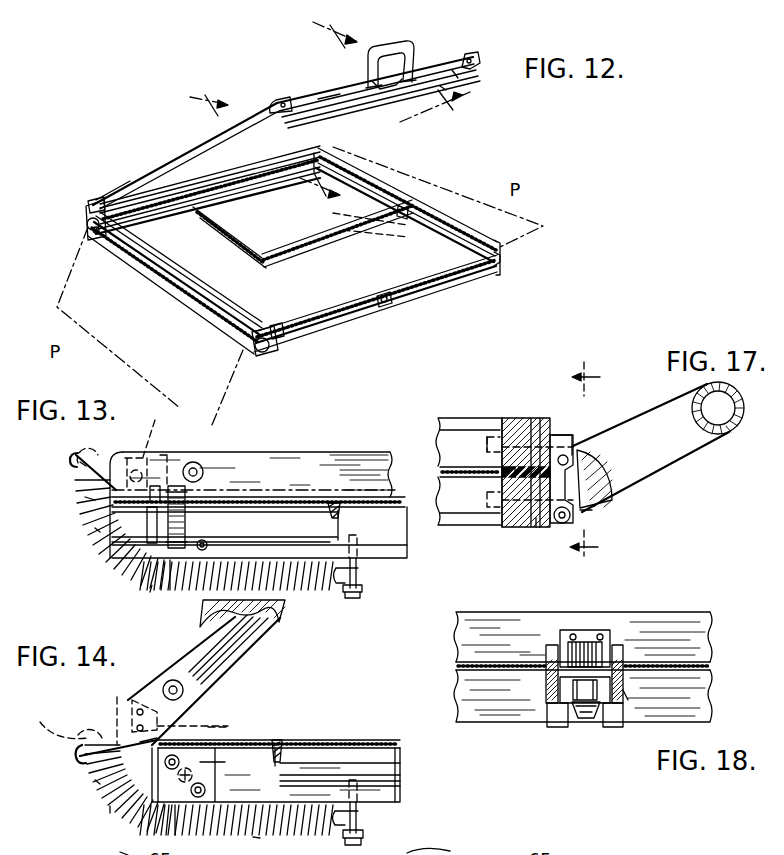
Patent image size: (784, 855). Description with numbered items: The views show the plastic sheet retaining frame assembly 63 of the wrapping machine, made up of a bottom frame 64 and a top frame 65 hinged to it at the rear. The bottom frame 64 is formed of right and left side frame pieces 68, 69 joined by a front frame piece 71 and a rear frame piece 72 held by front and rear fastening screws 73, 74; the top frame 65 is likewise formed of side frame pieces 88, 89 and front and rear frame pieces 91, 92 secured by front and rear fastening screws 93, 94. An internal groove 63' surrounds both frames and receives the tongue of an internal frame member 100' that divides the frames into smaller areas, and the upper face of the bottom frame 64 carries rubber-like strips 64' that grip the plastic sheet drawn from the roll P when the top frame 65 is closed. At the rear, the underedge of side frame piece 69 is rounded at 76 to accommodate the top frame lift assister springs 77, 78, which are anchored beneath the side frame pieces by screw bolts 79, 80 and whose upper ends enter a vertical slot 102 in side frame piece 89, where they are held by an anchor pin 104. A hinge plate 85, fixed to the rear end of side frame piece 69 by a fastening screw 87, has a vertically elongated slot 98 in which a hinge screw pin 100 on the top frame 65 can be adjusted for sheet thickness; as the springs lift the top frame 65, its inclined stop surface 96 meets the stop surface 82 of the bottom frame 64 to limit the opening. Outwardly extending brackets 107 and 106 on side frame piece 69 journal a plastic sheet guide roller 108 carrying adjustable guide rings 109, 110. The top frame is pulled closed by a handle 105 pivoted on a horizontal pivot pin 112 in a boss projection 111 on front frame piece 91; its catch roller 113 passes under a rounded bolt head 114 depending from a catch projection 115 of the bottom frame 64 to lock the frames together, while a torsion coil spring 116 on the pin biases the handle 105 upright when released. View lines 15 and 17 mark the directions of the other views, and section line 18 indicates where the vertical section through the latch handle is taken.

In FIG. 12, the section line 15 is at (237, 158).
In FIG. 12, the section line 17 is at (389, 81).
In FIG. 17, the section line 18 is at (596, 462).
In FIG. 12, the plastic sheet retaining frame assembly 63 is at (115, 159).
In FIG. 12, the internal groove 63' is at (407, 193).
In FIG. 12, the bottom frame 64 is at (294, 285).
In FIG. 13, the bottom frame 64 is at (276, 563).
In FIG. 14, the bottom frame 64 is at (295, 790).
In FIG. 17, the bottom frame 64 is at (504, 487).
In FIG. 18, the bottom frame 64 is at (583, 711).
In FIG. 12, the rubber-like strips 64' is at (296, 232).
In FIG. 13, the rubber-like strips 64' is at (275, 461).
In FIG. 14, the rubber-like strips 64' is at (279, 731).
In FIG. 17, the rubber-like strips 64' is at (495, 472).
In FIG. 18, the rubber-like strips 64' is at (605, 675).
In FIG. 12, the top frame 65 is at (437, 60).
In FIG. 13, the top frame 65 is at (291, 449).
In FIG. 14, the top frame 65 is at (172, 652).
In FIG. 17, the top frame 65 is at (466, 417).
In FIG. 18, the top frame 65 is at (509, 606).
In FIG. 12, the right side frame piece 68 is at (403, 220).
In FIG. 17, the right side frame piece 68 is at (493, 518).
In FIG. 12, the left side frame piece 69 is at (228, 312).
In FIG. 13, the left side frame piece 69 is at (398, 541).
In FIG. 14, the left side frame piece 69 is at (394, 789).
In FIG. 12, the front frame piece 71 is at (316, 316).
In FIG. 17, the front frame piece 71 is at (518, 522).
In FIG. 12, the rear frame piece 72 is at (213, 201).
In FIG. 12, the front fastening screws 73 is at (283, 343).
In FIG. 17, the front fastening screws 73 is at (537, 530).
In FIG. 14, the rear fastening screws 74 is at (222, 785).
In FIG. 13, the rounded underedge 76 is at (112, 550).
In FIG. 14, the rounded underedge 76 is at (130, 808).
In FIG. 12, the top frame lift assister spring 77 is at (312, 189).
In FIG. 13, the top frame lift assister spring 78 is at (85, 500).
In FIG. 14, the top frame lift assister spring 78 is at (254, 838).
In FIG. 12, the screw bolt 79 is at (372, 228).
In FIG. 13, the screw bolt 80 is at (358, 572).
In FIG. 14, the screw bolt 80 is at (360, 813).
In FIG. 13, the top stop surface 82 is at (95, 529).
In FIG. 14, the top stop surface 82 is at (97, 781).
In FIG. 13, the hinge plate 85 is at (121, 456).
In FIG. 14, the hinge plate 85 is at (117, 700).
In FIG. 13, the fastening screw 87 is at (150, 593).
In FIG. 14, the fastening screw 87 is at (97, 815).
In FIG. 12, the side frame piece 88 is at (454, 77).
In FIG. 17, the side frame piece 88 is at (493, 420).
In FIG. 12, the side frame piece 89 is at (170, 163).
In FIG. 13, the side frame piece 89 is at (346, 448).
In FIG. 14, the side frame piece 89 is at (233, 659).
In FIG. 12, the front frame piece 91 is at (330, 98).
In FIG. 12, the rear frame piece 92 is at (255, 154).
In FIG. 12, the front fastening screws 93 is at (281, 100).
In FIG. 17, the front fastening screws 93 is at (533, 417).
In FIG. 12, the rear fastening screws 94 is at (97, 202).
In FIG. 13, the rear fastening screws 94 is at (195, 461).
In FIG. 14, the rear fastening screws 94 is at (166, 683).
In FIG. 12, the inclined stop surface 96 is at (86, 219).
In FIG. 13, the inclined stop surface 96 is at (78, 473).
In FIG. 14, the inclined stop surface 96 is at (87, 723).
In FIG. 13, the elongated slot 98 is at (168, 454).
In FIG. 14, the elongated slot 98 is at (205, 723).
In FIG. 13, the hinge screw pin 100 is at (161, 430).
In FIG. 14, the hinge screw pin 100 is at (235, 726).
In FIG. 12, the internal frame member 100' is at (337, 233).
In FIG. 13, the vertical slot 102 is at (100, 453).
In FIG. 14, the vertical slot 102 is at (53, 718).
In FIG. 13, the anchor pin 104 is at (76, 456).
In FIG. 14, the anchor pin 104 is at (78, 751).
In FIG. 12, the handle 105 is at (396, 48).
In FIG. 17, the handle 105 is at (657, 415).
In FIG. 18, the handle 105 is at (633, 695).
In FIG. 12, the hinge bracket 106 is at (273, 350).
In FIG. 12, the bracket 107 is at (85, 203).
In FIG. 13, the bracket 107 is at (182, 572).
In FIG. 14, the bracket 107 is at (211, 776).
In FIG. 12, the plastic sheet guide roller 108 is at (168, 282).
In FIG. 13, the plastic sheet guide roller 108 is at (273, 517).
In FIG. 14, the plastic sheet guide roller 108 is at (336, 750).
In FIG. 12, the adjustable guide ring 109 is at (260, 353).
In FIG. 12, the adjustable guide ring 110 is at (90, 232).
In FIG. 13, the adjustable guide ring 110 is at (216, 507).
In FIG. 17, the boss projection 111 is at (570, 436).
In FIG. 18, the boss projection 111 is at (589, 634).
In FIG. 12, the horizontal pivot pin 112 is at (376, 80).
In FIG. 17, the horizontal pivot pin 112 is at (572, 450).
In FIG. 18, the horizontal pivot pin 112 is at (549, 644).
In FIG. 12, the catch roller 113 is at (441, 88).
In FIG. 17, the catch roller 113 is at (571, 523).
In FIG. 18, the catch roller 113 is at (581, 718).
In FIG. 17, the rounded bolt head 114 is at (580, 510).
In FIG. 18, the rounded bolt head 114 is at (573, 714).
In FIG. 12, the catch projection 115 is at (384, 306).
In FIG. 17, the catch projection 115 is at (612, 493).
In FIG. 18, the catch projection 115 is at (567, 688).
In FIG. 17, the torsion coil spring 116 is at (577, 458).
In FIG. 18, the torsion coil spring 116 is at (604, 654).